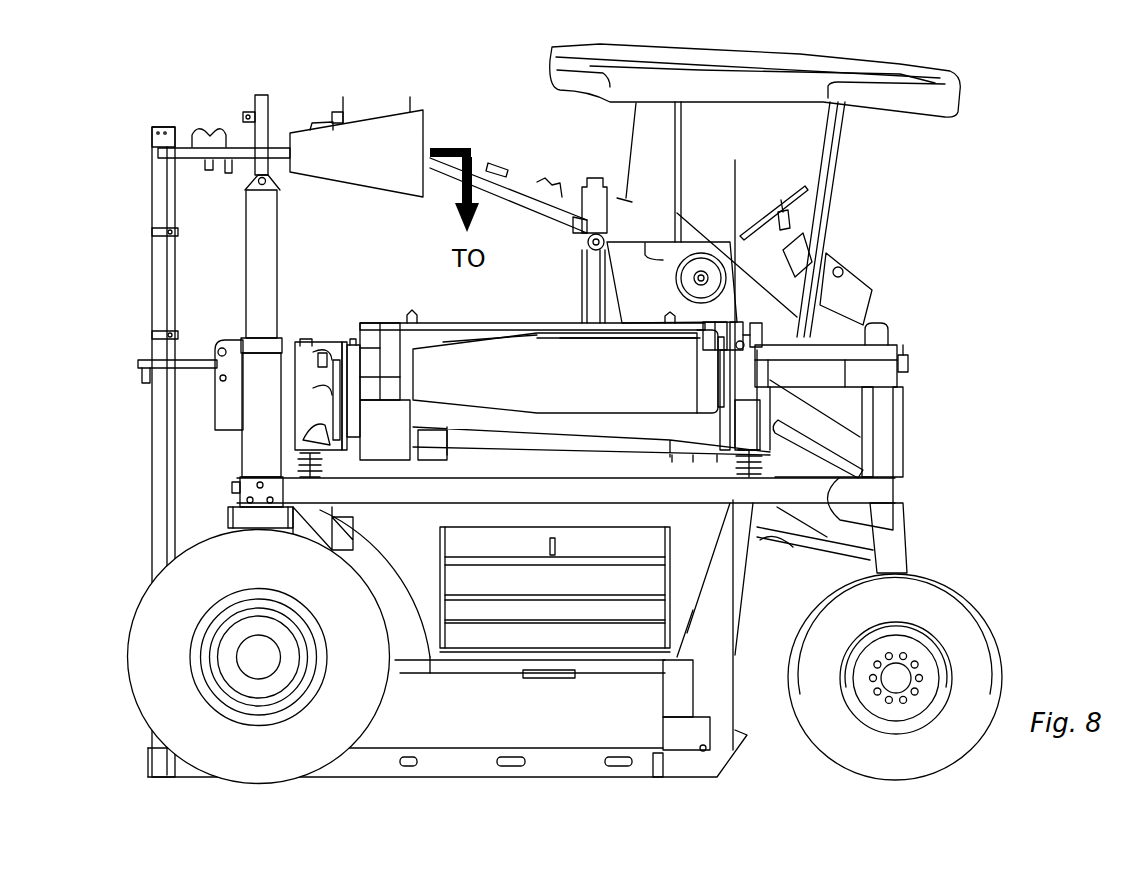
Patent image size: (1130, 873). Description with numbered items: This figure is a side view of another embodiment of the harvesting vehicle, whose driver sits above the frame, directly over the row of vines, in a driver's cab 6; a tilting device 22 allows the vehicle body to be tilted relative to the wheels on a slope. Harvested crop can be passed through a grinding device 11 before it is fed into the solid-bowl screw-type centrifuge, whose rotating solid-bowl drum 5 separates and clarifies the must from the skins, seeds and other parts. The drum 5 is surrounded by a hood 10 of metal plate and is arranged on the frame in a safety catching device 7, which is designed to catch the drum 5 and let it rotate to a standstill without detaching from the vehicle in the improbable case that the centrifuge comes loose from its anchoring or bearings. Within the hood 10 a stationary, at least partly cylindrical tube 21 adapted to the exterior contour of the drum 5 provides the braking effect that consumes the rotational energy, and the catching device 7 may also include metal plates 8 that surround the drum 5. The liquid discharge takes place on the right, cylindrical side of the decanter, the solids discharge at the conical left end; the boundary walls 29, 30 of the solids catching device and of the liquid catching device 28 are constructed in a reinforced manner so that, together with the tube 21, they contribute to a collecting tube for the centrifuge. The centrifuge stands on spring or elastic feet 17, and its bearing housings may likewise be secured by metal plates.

The solid-bowl drum 5 is at (612, 285).
The driver's cab 6 is at (803, 176).
The safety catching device 7 is at (510, 328).
The metal plates 8 is at (318, 345).
The hood 10 is at (462, 318).
The grinding device 11 is at (387, 432).
The feet 17 is at (768, 457).
The tube 21 is at (541, 322).
The tilting device 22 is at (232, 384).
The liquid catching device 28 is at (735, 160).
The boundary wall of the solids catching device 29 is at (412, 328).
The boundary wall of the liquid catching device 30 is at (720, 413).